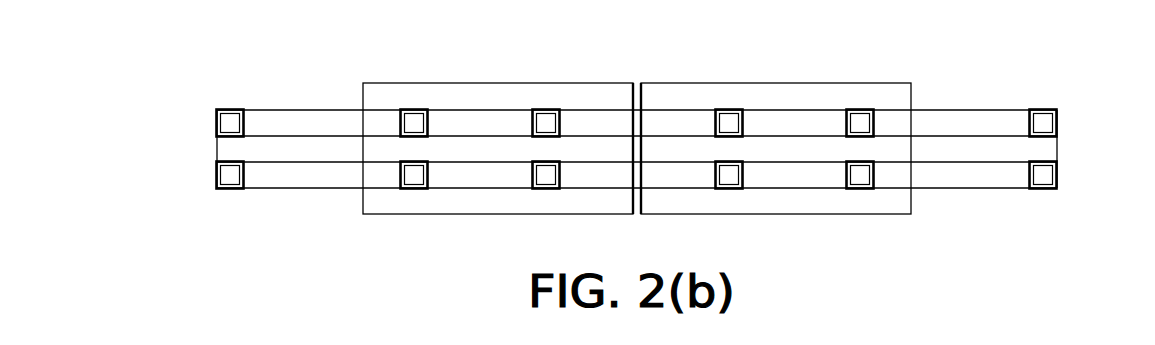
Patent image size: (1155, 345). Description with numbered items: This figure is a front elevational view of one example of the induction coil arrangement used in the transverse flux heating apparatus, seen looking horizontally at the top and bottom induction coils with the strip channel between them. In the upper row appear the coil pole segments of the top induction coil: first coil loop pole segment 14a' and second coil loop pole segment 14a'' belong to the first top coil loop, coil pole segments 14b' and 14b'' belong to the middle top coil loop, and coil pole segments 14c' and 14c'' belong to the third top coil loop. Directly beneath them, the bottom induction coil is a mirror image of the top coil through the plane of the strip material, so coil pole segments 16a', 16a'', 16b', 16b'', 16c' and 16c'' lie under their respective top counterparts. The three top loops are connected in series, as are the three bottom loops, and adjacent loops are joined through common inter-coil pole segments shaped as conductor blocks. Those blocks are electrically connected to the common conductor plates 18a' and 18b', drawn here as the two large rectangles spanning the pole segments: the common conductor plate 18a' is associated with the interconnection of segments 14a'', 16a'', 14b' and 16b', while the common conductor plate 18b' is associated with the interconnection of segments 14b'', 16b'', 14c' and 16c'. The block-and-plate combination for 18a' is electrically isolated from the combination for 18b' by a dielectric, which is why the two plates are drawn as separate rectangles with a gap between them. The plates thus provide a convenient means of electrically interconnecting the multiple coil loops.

The first coil loop pole segment 14a' is at (250, 103).
The second coil loop pole segment 14a'' is at (405, 83).
The coil pole segment 14b' is at (537, 83).
The coil pole segment 14b'' is at (724, 83).
The coil pole segment 14c' is at (853, 83).
The coil pole segment 14c'' is at (1066, 103).
The coil pole segment 16a' is at (252, 193).
The coil pole segment 16a'' is at (436, 210).
The coil pole segment 16b' is at (570, 210).
The coil pole segment 16b'' is at (749, 211).
The coil pole segment 16c' is at (882, 211).
The coil pole segment 16c'' is at (1069, 193).
The common conductor plate 18a' is at (498, 167).
The common conductor plate 18b' is at (776, 167).